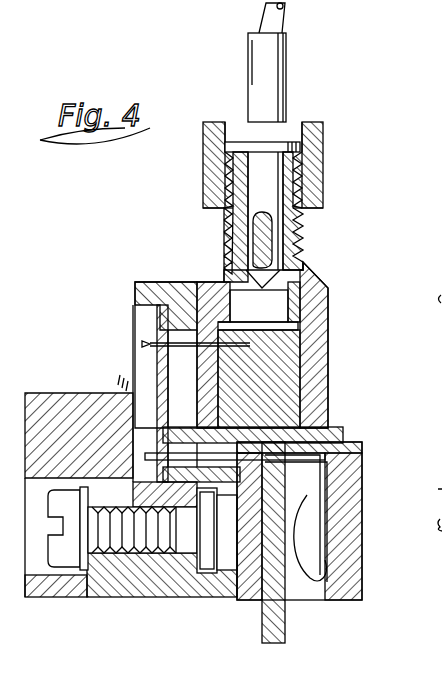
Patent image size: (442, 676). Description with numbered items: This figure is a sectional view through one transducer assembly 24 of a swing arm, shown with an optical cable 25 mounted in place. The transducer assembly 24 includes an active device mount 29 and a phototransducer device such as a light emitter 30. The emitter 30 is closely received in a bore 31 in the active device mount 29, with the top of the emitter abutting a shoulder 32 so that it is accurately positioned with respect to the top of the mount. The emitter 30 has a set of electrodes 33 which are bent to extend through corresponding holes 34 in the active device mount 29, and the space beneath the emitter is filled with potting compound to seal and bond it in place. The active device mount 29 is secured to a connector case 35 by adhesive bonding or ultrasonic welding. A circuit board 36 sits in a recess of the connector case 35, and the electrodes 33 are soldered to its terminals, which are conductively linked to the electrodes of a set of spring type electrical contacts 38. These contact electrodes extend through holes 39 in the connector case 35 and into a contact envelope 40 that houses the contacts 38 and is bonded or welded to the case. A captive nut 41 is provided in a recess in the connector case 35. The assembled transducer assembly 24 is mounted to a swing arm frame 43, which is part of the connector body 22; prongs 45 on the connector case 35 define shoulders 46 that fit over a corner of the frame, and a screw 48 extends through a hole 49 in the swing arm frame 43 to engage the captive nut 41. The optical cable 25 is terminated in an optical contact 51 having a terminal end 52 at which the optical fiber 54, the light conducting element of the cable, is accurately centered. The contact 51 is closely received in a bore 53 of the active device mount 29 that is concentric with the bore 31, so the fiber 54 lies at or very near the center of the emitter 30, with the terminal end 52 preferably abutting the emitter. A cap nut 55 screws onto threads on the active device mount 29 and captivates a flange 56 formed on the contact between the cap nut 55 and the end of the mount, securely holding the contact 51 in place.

The connector body 22 is at (38, 388).
The transducer assembly 24 is at (248, 338).
The optical cable 25 is at (270, 22).
The active device mount 29 is at (330, 383).
The light emitter 30 is at (262, 334).
The bore 31 is at (308, 280).
The shoulder 32 is at (250, 288).
The electrodes 33 is at (262, 356).
The holes 34 is at (259, 355).
The connector case 35 is at (138, 282).
The circuit board 36 is at (133, 310).
The spring type electrical contacts 38 is at (313, 578).
The holes 39 is at (133, 446).
The contact envelope 40 is at (362, 518).
The captive nut 41 is at (228, 572).
The swing arm frame 43 is at (110, 597).
The prongs 45 is at (133, 350).
The shoulders 46 is at (128, 396).
The screw 48 is at (63, 567).
The hole 49 is at (147, 567).
The optical contact 51 is at (305, 222).
The terminal end 52 is at (222, 277).
The bore 53 is at (272, 175).
The optical fiber 54 is at (262, 240).
The cap nut 55 is at (320, 136).
The flange 56 is at (292, 142).